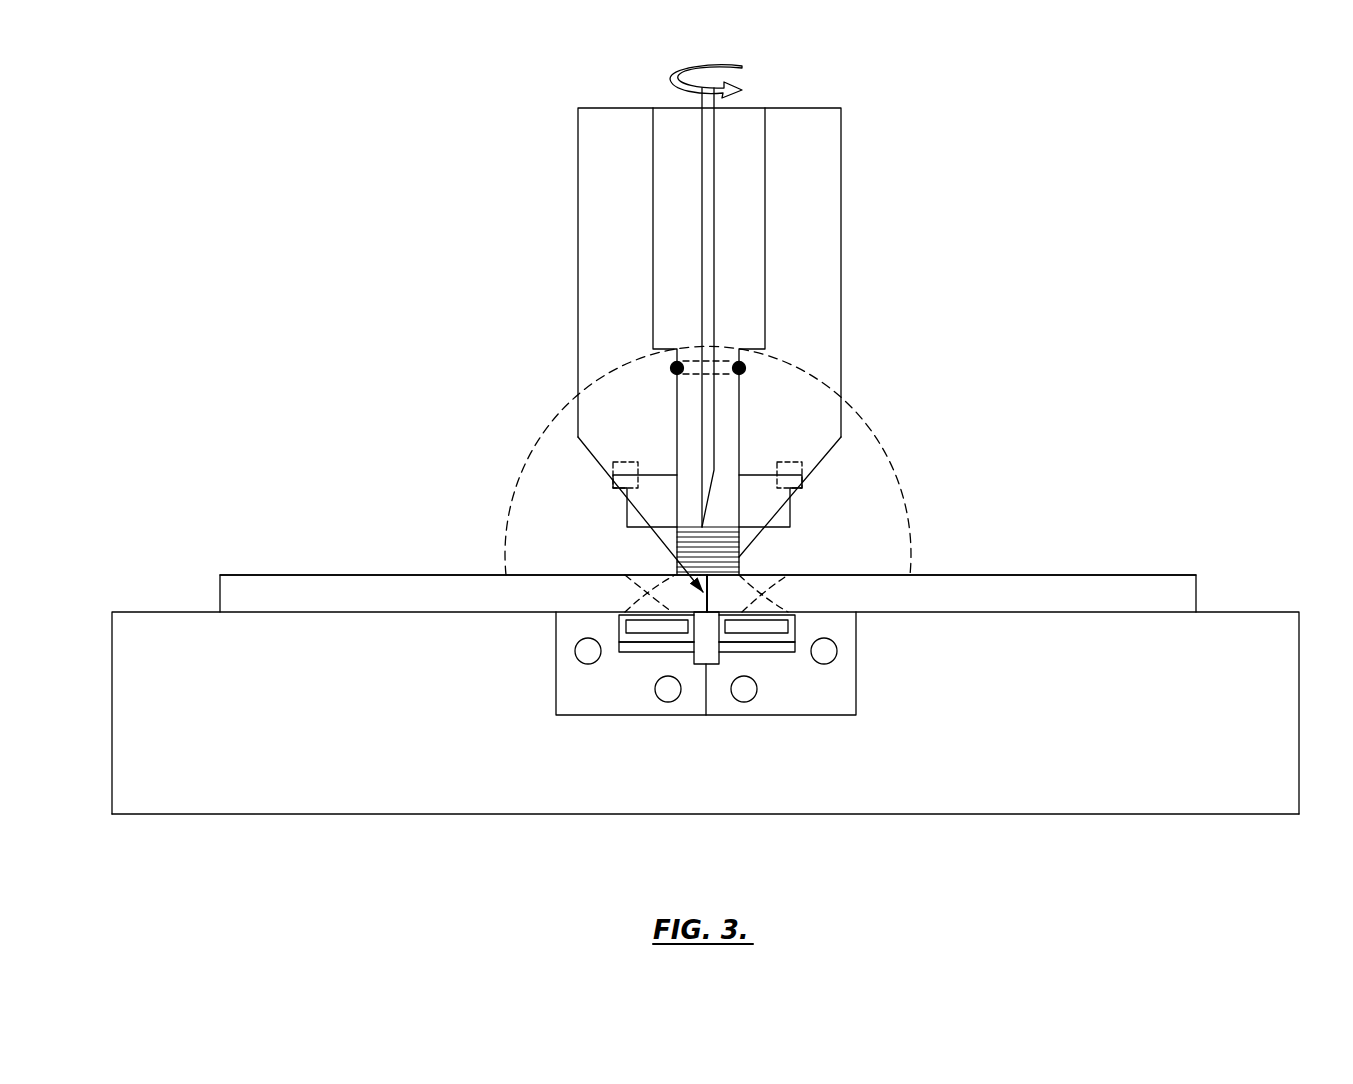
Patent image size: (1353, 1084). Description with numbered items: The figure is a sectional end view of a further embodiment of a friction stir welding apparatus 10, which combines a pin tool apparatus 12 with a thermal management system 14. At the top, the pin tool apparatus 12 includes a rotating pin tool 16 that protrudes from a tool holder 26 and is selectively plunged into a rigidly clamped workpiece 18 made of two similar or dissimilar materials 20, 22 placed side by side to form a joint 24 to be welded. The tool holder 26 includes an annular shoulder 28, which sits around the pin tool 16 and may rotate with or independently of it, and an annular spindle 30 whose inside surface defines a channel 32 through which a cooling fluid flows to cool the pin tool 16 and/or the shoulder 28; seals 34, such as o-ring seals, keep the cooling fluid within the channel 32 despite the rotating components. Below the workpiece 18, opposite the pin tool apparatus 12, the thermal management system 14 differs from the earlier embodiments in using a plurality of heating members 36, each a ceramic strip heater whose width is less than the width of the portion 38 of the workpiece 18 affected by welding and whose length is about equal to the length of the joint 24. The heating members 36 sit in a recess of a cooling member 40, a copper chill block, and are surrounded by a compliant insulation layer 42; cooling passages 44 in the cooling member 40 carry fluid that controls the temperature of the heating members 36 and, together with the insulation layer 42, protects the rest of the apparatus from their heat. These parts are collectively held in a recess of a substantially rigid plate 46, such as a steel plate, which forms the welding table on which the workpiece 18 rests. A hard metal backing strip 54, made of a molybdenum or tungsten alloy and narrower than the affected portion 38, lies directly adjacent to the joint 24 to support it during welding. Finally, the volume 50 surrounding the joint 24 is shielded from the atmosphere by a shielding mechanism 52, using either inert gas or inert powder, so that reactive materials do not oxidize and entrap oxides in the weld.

The friction stir welding apparatus 10 is at (1073, 310).
The pin tool apparatus 12 is at (862, 158).
The thermal management system 14 is at (820, 600).
The pin tool 16 is at (787, 488).
The workpiece 18 is at (1105, 577).
The material 20 is at (1072, 577).
The material 22 is at (345, 575).
The joint 24 is at (612, 470).
The tool holder 26 is at (557, 270).
The shoulder 28 is at (767, 473).
The spindle 30 is at (841, 270).
The channel 32 is at (715, 137).
The seal 34 is at (745, 358).
The heating member 36 is at (767, 645).
The portion of the workpiece 38 is at (638, 567).
The cooling member 40 is at (782, 717).
The compliant insulation layer 42 is at (620, 647).
The cooling passage 44 is at (705, 703).
The substantially rigid plate 46 is at (308, 814).
The volume 50 is at (582, 550).
The shielding mechanism 52 is at (557, 452).
The hard metal backing strip 54 is at (707, 665).